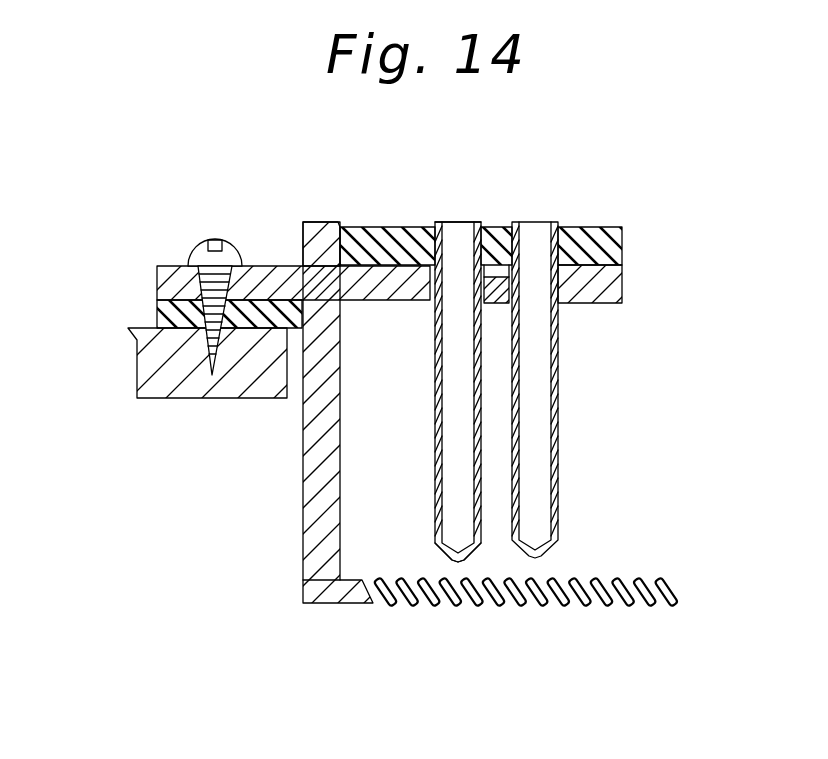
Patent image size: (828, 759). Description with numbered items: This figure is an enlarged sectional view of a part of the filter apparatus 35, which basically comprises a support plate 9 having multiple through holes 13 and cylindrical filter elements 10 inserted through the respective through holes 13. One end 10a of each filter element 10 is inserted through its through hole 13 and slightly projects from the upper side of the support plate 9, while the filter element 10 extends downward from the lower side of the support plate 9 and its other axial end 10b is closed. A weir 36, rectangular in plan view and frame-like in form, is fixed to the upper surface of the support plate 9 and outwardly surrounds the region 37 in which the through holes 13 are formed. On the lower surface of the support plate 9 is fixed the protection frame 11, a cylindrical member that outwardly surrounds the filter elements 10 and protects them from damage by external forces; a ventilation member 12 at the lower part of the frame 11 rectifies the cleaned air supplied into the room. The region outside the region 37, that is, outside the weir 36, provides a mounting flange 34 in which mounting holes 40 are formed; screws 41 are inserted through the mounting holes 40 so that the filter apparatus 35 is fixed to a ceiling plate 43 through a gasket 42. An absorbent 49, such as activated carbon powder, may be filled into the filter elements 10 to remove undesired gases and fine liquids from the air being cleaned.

The support plate 9 is at (615, 283).
The filter element 10 is at (435, 428).
The one end of filter element 10a is at (450, 220).
The other axial end of filter element 10b is at (455, 555).
The protection frame 11 is at (313, 473).
The ventilation member 12 is at (423, 603).
The through holes 13 is at (427, 293).
The mounting flange 34 is at (273, 272).
The filter apparatus 35 is at (563, 192).
The weir 36 is at (308, 222).
The region 37 is at (500, 232).
The mounting holes 40 is at (198, 283).
The screws 41 is at (205, 337).
The gasket 42 is at (158, 320).
The ceiling plate 43 is at (148, 370).
The absorbent 49 is at (527, 380).